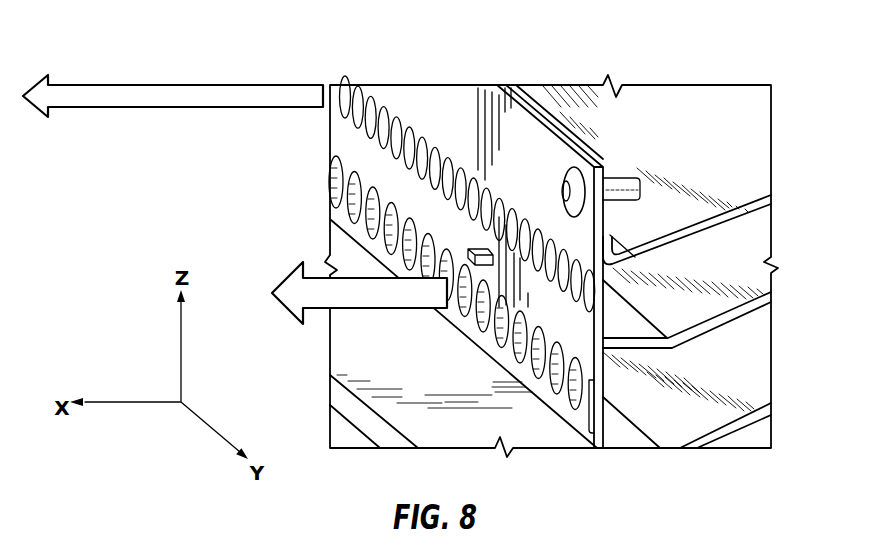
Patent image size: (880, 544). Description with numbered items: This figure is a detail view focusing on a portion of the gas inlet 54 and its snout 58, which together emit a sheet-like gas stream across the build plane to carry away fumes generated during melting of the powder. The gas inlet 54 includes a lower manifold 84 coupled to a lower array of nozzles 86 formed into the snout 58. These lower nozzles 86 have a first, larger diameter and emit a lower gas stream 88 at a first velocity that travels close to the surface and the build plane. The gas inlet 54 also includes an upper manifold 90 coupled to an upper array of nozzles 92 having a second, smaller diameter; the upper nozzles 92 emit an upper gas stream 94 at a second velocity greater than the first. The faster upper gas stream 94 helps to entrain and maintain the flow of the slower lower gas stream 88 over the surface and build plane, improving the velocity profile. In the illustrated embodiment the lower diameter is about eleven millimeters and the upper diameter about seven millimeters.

The gas inlet 54 is at (707, 97).
The snout 58 is at (513, 150).
The lower manifold 84 is at (737, 372).
The lower array of nozzles 86 is at (370, 200).
The lower gas stream 88 is at (285, 280).
The upper manifold 90 is at (737, 247).
The upper array of nozzles 92 is at (408, 127).
The upper gas stream 94 is at (163, 90).